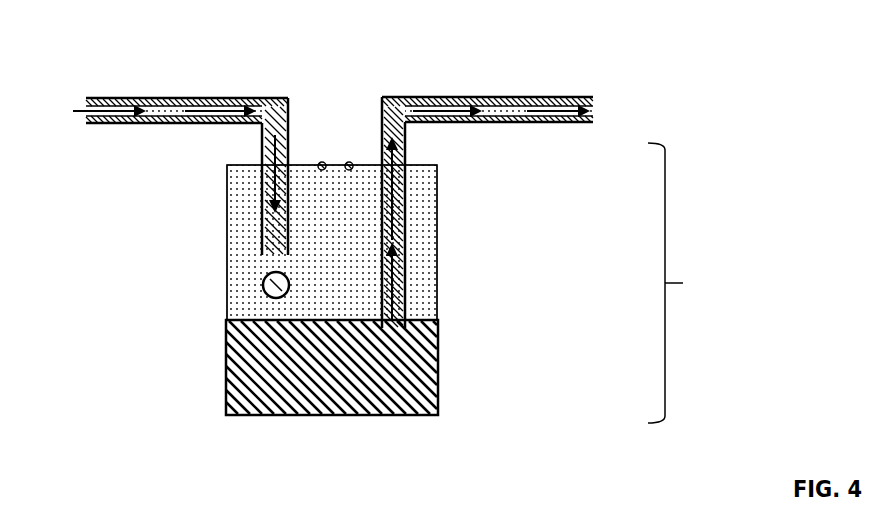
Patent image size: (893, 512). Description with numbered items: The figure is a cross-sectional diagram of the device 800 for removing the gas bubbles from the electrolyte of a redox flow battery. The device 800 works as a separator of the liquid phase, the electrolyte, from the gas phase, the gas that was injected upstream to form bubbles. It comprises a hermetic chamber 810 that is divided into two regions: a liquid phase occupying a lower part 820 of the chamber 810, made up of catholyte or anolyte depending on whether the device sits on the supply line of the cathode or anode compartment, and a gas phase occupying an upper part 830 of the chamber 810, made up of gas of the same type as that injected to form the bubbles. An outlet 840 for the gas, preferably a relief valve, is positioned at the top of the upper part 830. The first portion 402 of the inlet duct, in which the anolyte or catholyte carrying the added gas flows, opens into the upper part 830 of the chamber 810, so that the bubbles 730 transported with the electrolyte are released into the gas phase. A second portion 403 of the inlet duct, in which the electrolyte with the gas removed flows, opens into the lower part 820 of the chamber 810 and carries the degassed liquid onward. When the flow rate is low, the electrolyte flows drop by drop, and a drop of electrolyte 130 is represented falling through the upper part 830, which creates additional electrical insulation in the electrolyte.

The first portion of the inlet duct 402 is at (200, 98).
The second portion of the inlet duct 403 is at (500, 98).
The bubbles 730 is at (260, 122).
The drop of electrolyte 130 is at (263, 278).
The device for removing the gas bubbles 800 is at (688, 283).
The hermetic chamber 810 is at (435, 248).
The lower part of the chamber 820 is at (435, 387).
The upper part of the chamber 830 is at (423, 218).
The outlet for the gas 840 is at (342, 162).